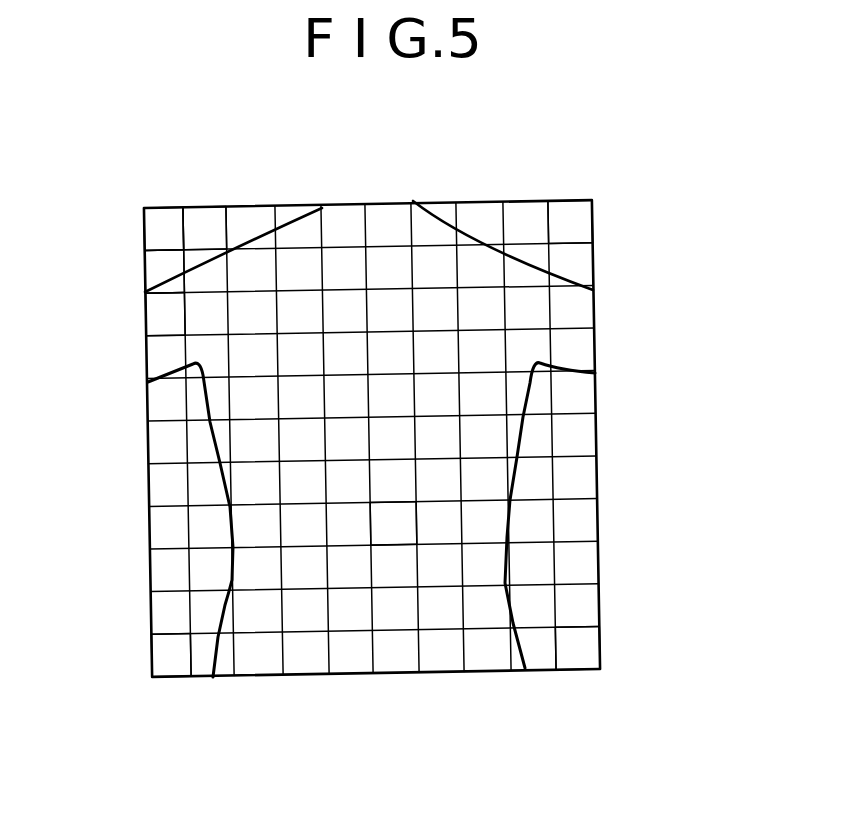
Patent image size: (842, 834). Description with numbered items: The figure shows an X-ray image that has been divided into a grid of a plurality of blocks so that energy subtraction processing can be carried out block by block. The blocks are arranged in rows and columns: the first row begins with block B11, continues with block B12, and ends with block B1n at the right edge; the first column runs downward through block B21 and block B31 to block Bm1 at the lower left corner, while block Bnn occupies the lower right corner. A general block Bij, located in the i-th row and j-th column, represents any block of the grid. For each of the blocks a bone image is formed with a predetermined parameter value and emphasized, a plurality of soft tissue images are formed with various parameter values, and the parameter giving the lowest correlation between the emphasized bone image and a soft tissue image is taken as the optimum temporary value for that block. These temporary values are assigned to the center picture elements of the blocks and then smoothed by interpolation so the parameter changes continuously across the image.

The block B11 is at (162, 222).
The block B12 is at (213, 217).
The block B1n is at (573, 217).
The block B21 is at (160, 267).
The block B31 is at (165, 317).
The block Bm1 is at (170, 660).
The block Bnn is at (573, 647).
The block Bij is at (397, 533).